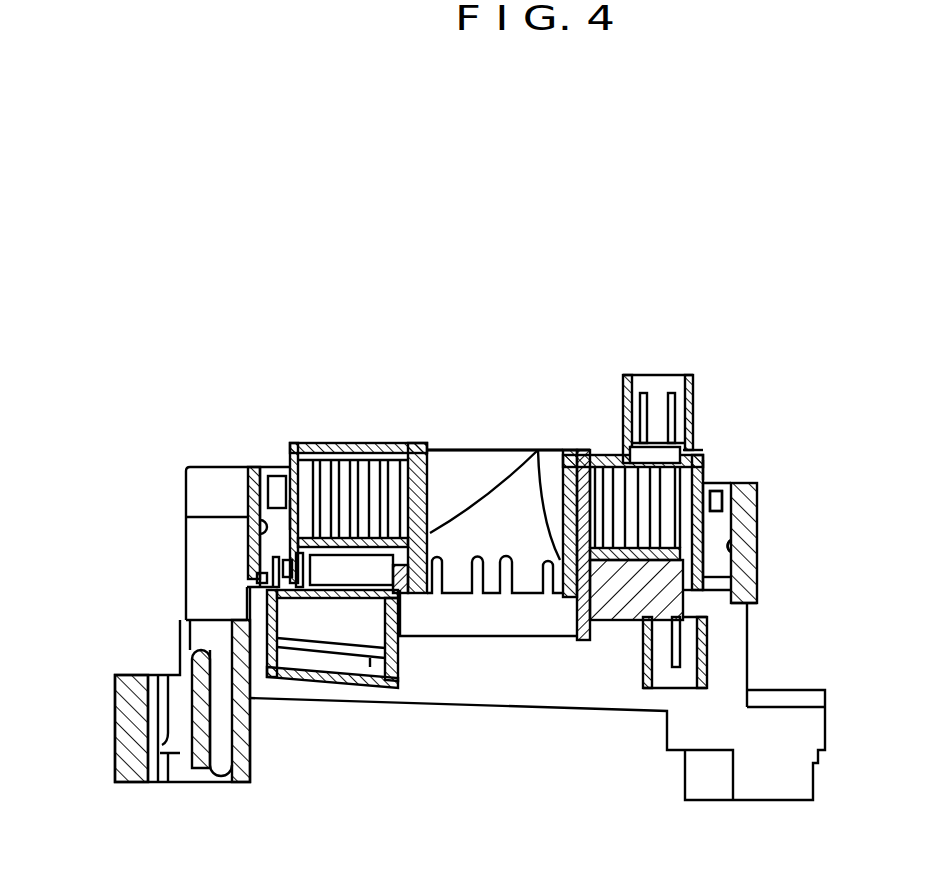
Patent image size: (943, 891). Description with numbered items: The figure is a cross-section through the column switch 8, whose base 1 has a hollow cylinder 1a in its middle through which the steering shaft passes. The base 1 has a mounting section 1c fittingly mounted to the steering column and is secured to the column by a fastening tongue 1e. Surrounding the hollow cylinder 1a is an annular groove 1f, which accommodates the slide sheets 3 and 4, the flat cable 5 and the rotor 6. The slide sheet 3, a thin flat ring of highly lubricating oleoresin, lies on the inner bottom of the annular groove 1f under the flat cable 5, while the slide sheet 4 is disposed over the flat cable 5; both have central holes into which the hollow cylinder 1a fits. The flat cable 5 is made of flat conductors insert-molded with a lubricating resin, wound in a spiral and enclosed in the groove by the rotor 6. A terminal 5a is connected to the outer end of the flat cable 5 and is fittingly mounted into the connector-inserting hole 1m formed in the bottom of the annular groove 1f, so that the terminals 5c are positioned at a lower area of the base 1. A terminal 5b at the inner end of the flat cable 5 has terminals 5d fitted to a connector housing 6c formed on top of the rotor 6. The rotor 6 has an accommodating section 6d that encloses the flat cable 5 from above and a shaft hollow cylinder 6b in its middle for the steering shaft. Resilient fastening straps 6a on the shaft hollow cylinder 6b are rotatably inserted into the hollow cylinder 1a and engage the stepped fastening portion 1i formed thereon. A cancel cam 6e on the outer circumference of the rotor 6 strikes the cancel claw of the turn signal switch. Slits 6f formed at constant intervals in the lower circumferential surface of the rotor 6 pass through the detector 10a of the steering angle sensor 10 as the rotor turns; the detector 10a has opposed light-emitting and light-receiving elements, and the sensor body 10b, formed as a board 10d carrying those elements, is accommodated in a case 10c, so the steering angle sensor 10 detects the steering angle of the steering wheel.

The base 1 is at (185, 485).
The hollow cylinder 1a is at (432, 450).
The mounting section 1c is at (158, 740).
The fastening tongue 1e is at (197, 768).
The annular groove 1f is at (257, 518).
The fastening portion 1i is at (538, 450).
The connector-inserting hole 1m is at (707, 620).
The slide sheet 3 is at (252, 505).
The slide sheet 4 is at (327, 443).
The flat cable 5 is at (292, 475).
The terminal 5a is at (625, 605).
The terminal 5b is at (665, 457).
The terminals 5c is at (675, 665).
The terminals 5d is at (658, 393).
The rotor 6 is at (600, 455).
The resilient fastening strap 6a is at (558, 597).
The shaft hollow cylinder 6b is at (458, 458).
The connector housing 6c is at (693, 448).
The accommodating section 6d is at (290, 510).
The cancel cam 6e is at (272, 470).
The slits 6f is at (248, 546).
The column switch 8 is at (347, 423).
The steering angle sensor 10 is at (333, 678).
The detector 10a is at (272, 585).
The body 10b is at (297, 677).
The case 10c is at (363, 679).
The board 10d is at (372, 668).